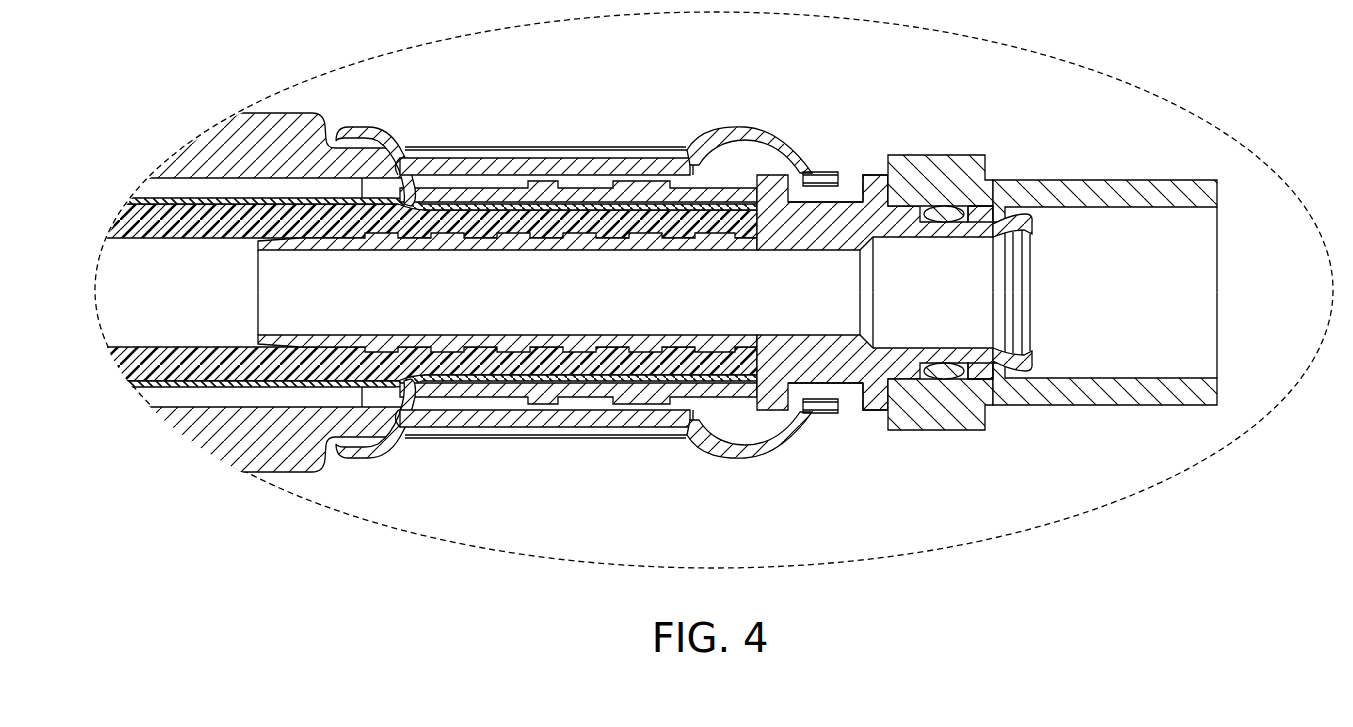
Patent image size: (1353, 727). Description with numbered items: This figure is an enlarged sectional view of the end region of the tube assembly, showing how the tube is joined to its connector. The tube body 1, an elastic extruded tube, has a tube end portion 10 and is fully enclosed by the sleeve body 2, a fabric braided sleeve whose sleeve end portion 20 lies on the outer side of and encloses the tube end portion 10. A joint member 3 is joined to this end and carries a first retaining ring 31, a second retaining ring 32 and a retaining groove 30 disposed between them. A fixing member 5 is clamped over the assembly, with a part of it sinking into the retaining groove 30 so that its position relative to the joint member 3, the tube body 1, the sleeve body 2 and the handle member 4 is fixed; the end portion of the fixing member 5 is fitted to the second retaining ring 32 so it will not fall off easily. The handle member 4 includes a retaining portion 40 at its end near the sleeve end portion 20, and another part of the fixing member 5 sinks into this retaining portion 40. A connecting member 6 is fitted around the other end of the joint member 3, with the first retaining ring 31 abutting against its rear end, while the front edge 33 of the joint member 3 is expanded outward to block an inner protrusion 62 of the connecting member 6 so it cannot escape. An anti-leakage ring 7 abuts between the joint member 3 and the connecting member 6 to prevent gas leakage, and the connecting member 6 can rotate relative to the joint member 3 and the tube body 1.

The tube body 1 is at (125, 239).
The sleeve body 2 is at (151, 198).
The joint member 3 is at (871, 410).
The handle member 4 is at (290, 113).
The fixing member 5 is at (549, 172).
The connecting member 6 is at (1068, 182).
The anti-leakage ring 7 is at (935, 207).
The tube end portion 10 is at (722, 369).
The sleeve end portion 20 is at (612, 386).
The retaining groove 30 is at (850, 211).
The first retaining ring 31 is at (876, 184).
The second retaining ring 32 is at (774, 182).
The front edge 33 is at (1014, 360).
The retaining portion 40 is at (374, 142).
The inner protrusion 62 is at (990, 369).